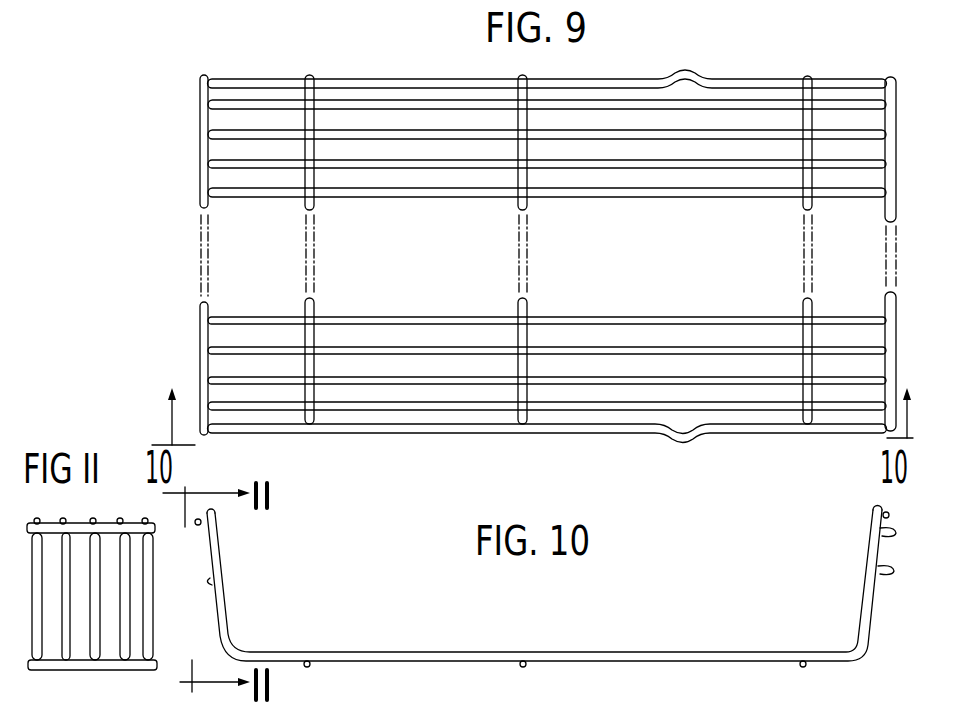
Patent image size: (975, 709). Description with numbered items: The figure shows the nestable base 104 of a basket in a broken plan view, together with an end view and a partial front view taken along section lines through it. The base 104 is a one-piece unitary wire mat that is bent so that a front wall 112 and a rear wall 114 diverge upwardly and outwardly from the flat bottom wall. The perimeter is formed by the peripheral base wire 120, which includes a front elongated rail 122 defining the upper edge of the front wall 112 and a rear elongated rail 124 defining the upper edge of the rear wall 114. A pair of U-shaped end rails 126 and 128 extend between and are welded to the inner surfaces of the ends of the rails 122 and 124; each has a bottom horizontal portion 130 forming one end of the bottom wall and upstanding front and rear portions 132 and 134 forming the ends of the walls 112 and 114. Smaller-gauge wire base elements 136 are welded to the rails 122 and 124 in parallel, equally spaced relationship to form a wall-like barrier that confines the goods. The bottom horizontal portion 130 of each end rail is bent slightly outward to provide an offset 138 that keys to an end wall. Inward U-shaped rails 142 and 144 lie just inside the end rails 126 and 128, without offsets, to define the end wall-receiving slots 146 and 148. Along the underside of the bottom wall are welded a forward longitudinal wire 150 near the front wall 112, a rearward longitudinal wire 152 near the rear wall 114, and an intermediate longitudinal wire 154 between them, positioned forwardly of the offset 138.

In FIG. 9, the nestable base 104 is at (192, 333).
In FIG. 10, the nestable base 104 is at (628, 628).
In FIG. 9, the front wall 112 is at (217, 130).
In FIG. 10, the front wall 112 is at (210, 580).
In FIG. 9, the rear wall 114 is at (880, 138).
In FIG. 10, the rear wall 114 is at (888, 570).
In FIG. 9, the peripheral base wire 120 is at (207, 307).
In FIG. 10, the peripheral base wire 120 is at (855, 645).
In FIG. 9, the front elongated rail 122 is at (197, 155).
In FIG. 11, the front elongated rail 122 is at (50, 522).
In FIG. 10, the front elongated rail 122 is at (203, 533).
In FIG. 9, the rear elongated rail 124 is at (883, 203).
In FIG. 10, the rear elongated rail 124 is at (888, 532).
In FIG. 9, the U-shaped end rail 126 is at (277, 78).
In FIG. 9, the U-shaped end rail 128 is at (282, 433).
In FIG. 11, the U-shaped end rail 128 is at (155, 592).
In FIG. 10, the U-shaped end rail 128 is at (220, 623).
In FIG. 9, the bottom horizontal portion 130 is at (357, 78).
In FIG. 11, the bottom horizontal portion 130 is at (55, 667).
In FIG. 10, the bottom horizontal portion 130 is at (423, 660).
In FIG. 9, the upstanding front portion 132 is at (218, 77).
In FIG. 9, the upstanding rear portion 134 is at (880, 80).
In FIG. 9, the wire base elements 136 is at (593, 163).
In FIG. 11, the wire base elements 136 is at (100, 643).
In FIG. 9, the offset 138 is at (693, 72).
In FIG. 10, the offset 138 is at (683, 652).
In FIG. 9, the inward U-shaped rail 142 is at (390, 100).
In FIG. 9, the inward U-shaped rail 144 is at (570, 413).
In FIG. 11, the inward U-shaped rail 144 is at (130, 573).
In FIG. 9, the end wall-receiving slot 146 is at (562, 97).
In FIG. 9, the end wall-receiving slot 148 is at (432, 414).
In FIG. 11, the end wall-receiving slot 148 is at (137, 640).
In FIG. 9, the forward longitudinal wire 150 is at (312, 333).
In FIG. 10, the forward longitudinal wire 150 is at (305, 663).
In FIG. 9, the rearward longitudinal wire 152 is at (800, 177).
In FIG. 10, the rearward longitudinal wire 152 is at (803, 665).
In FIG. 9, the intermediate longitudinal wire 154 is at (550, 317).
In FIG. 10, the intermediate longitudinal wire 154 is at (523, 663).